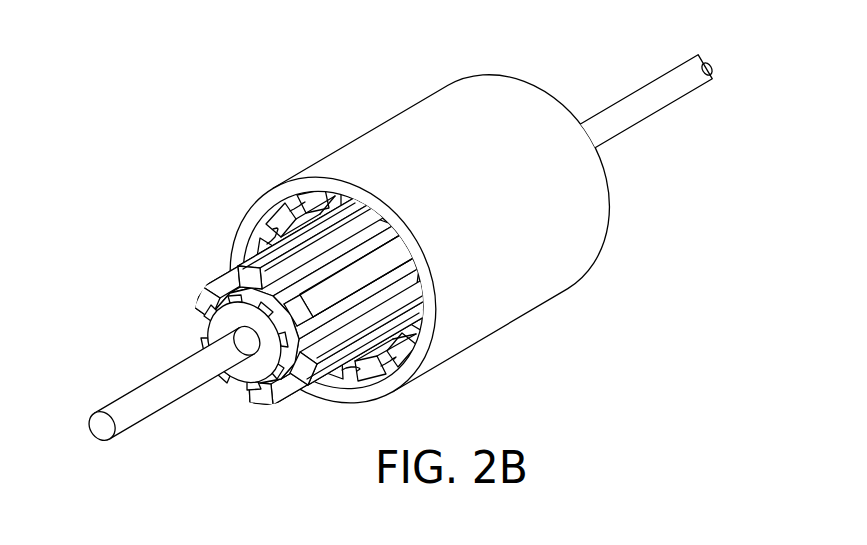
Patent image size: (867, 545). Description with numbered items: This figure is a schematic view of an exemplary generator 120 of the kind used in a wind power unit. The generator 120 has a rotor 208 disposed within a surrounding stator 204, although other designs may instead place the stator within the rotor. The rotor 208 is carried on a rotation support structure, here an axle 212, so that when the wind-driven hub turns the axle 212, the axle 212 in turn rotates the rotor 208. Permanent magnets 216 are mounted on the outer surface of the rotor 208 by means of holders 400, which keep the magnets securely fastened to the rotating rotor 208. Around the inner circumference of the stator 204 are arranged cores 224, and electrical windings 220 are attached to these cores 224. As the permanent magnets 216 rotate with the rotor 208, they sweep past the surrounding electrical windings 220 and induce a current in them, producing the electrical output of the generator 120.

The generator 120 is at (179, 198).
The stator 204 is at (406, 106).
The rotor 208 is at (307, 379).
The axle 212 is at (628, 113).
The permanent magnets 216 is at (253, 392).
The electrical windings 220 is at (240, 256).
The cores 224 is at (280, 210).
The holders 400 is at (316, 384).